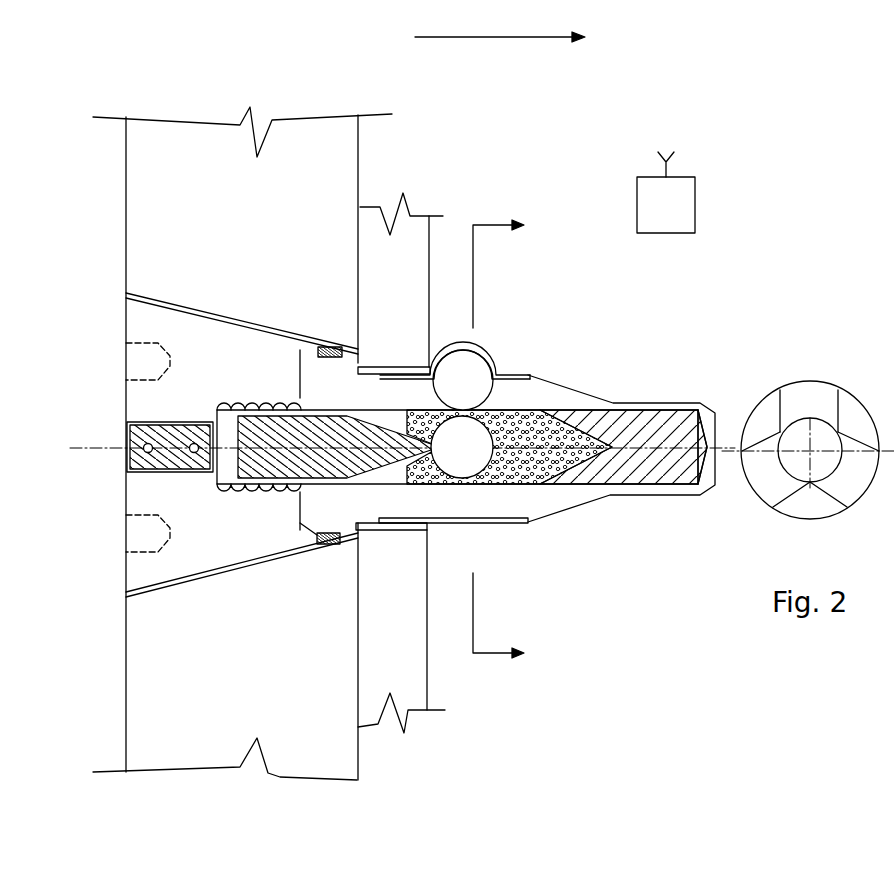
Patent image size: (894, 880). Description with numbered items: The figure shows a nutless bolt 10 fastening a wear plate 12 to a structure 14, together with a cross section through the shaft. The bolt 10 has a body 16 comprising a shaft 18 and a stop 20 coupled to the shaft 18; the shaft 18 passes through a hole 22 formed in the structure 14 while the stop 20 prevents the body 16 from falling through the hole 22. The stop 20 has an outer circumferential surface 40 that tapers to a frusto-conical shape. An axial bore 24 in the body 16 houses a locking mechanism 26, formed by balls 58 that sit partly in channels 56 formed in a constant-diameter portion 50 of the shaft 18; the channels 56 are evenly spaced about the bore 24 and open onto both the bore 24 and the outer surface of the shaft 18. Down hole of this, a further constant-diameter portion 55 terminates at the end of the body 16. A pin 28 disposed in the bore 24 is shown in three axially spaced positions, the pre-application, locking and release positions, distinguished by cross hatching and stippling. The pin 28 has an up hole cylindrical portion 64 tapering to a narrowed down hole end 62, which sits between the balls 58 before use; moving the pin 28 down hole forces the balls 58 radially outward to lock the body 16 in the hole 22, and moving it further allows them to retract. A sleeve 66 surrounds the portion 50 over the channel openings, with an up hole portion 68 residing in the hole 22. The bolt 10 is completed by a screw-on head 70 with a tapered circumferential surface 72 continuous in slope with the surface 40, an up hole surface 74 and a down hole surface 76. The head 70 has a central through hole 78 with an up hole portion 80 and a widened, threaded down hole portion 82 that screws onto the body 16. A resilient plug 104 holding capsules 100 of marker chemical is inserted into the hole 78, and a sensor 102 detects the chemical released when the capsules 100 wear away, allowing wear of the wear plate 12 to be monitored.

In FIG. 1, the nutless bolt 10 is at (60, 156).
In FIG. 1, the wear plate 12 is at (303, 153).
In FIG. 1, the structure 14 is at (412, 232).
In FIG. 1, the body 16 is at (566, 537).
In FIG. 1, the shaft 18 is at (550, 408).
In FIG. 2, the shaft 18 is at (857, 392).
In FIG. 1, the stop 20 is at (397, 363).
In FIG. 1, the hole 22 is at (343, 375).
In FIG. 2, the axial bore 24 is at (798, 435).
In FIG. 1, the locking mechanism 26 is at (472, 368).
In FIG. 1, the pin 28 is at (357, 558).
In FIG. 1, the outer circumferential surface 40 is at (325, 347).
In FIG. 2, the portion of constant outer diameter 50 is at (808, 500).
In FIG. 1, the portion of constant outer diameter 55 is at (605, 497).
In FIG. 2, the channels 56 is at (800, 397).
In FIG. 1, the balls 58 is at (473, 396).
In FIG. 1, the narrowed down hole end 62 is at (470, 484).
In FIG. 1, the up hole cylindrical portion 64 is at (282, 493).
In FIG. 1, the sleeve 66 is at (448, 538).
In FIG. 1, the up hole portion of sleeve 68 is at (398, 530).
In FIG. 1, the head 70 is at (152, 330).
In FIG. 1, the tapered circumferential surface 72 is at (193, 588).
In FIG. 1, the up hole surface 74 is at (122, 577).
In FIG. 1, the down hole surface 76 is at (327, 545).
In FIG. 1, the central through hole 78 is at (124, 466).
In FIG. 1, the up hole portion of hole 80 is at (193, 588).
In FIG. 1, the down hole portion of hole 82 is at (242, 497).
In FIG. 1, the capsules 100 is at (194, 444).
In FIG. 1, the sensor 102 is at (127, 445).
In FIG. 1, the resilient plug 104 is at (695, 195).